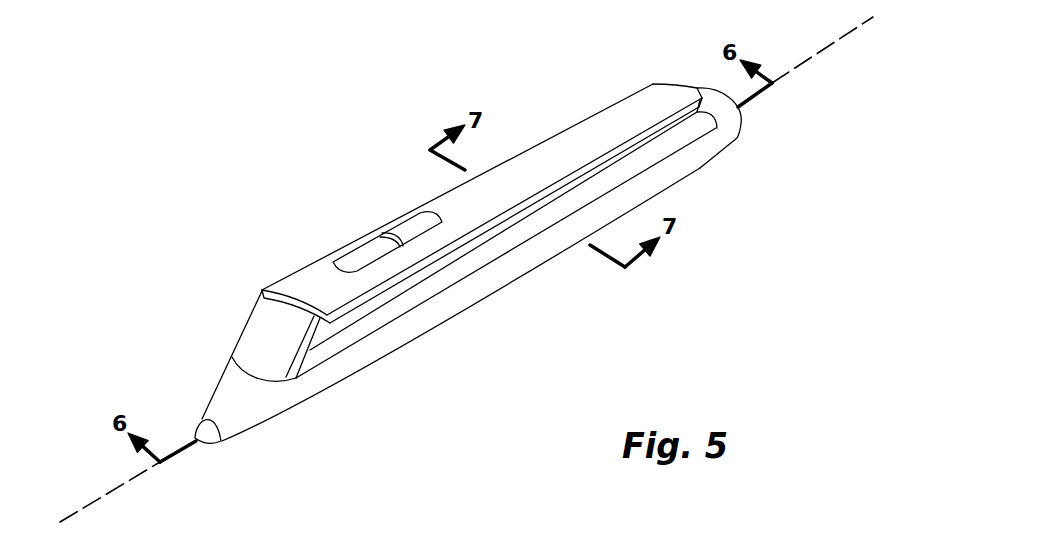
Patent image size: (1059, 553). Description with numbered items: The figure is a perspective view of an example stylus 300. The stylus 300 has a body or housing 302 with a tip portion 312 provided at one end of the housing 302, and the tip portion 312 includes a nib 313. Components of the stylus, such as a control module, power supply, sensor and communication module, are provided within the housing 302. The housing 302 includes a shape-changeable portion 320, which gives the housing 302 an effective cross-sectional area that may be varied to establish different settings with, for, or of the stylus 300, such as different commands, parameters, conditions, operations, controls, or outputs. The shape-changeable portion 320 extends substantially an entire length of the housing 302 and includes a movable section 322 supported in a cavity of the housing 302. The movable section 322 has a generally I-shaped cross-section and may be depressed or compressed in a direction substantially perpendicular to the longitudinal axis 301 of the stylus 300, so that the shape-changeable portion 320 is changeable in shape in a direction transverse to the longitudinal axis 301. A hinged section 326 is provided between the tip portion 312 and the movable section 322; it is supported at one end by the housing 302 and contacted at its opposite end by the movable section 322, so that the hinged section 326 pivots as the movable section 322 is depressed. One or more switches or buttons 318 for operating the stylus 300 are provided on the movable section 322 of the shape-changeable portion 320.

The stylus 300 is at (205, 113).
The longitudinal axis 301 is at (853, 28).
The housing 302 is at (538, 93).
The tip portion 312 is at (223, 367).
The nib 313 is at (206, 425).
The switch or button 318 is at (403, 230).
The shape-changeable portion 320 is at (460, 203).
The movable section 322 is at (318, 272).
The hinged section 326 is at (282, 333).